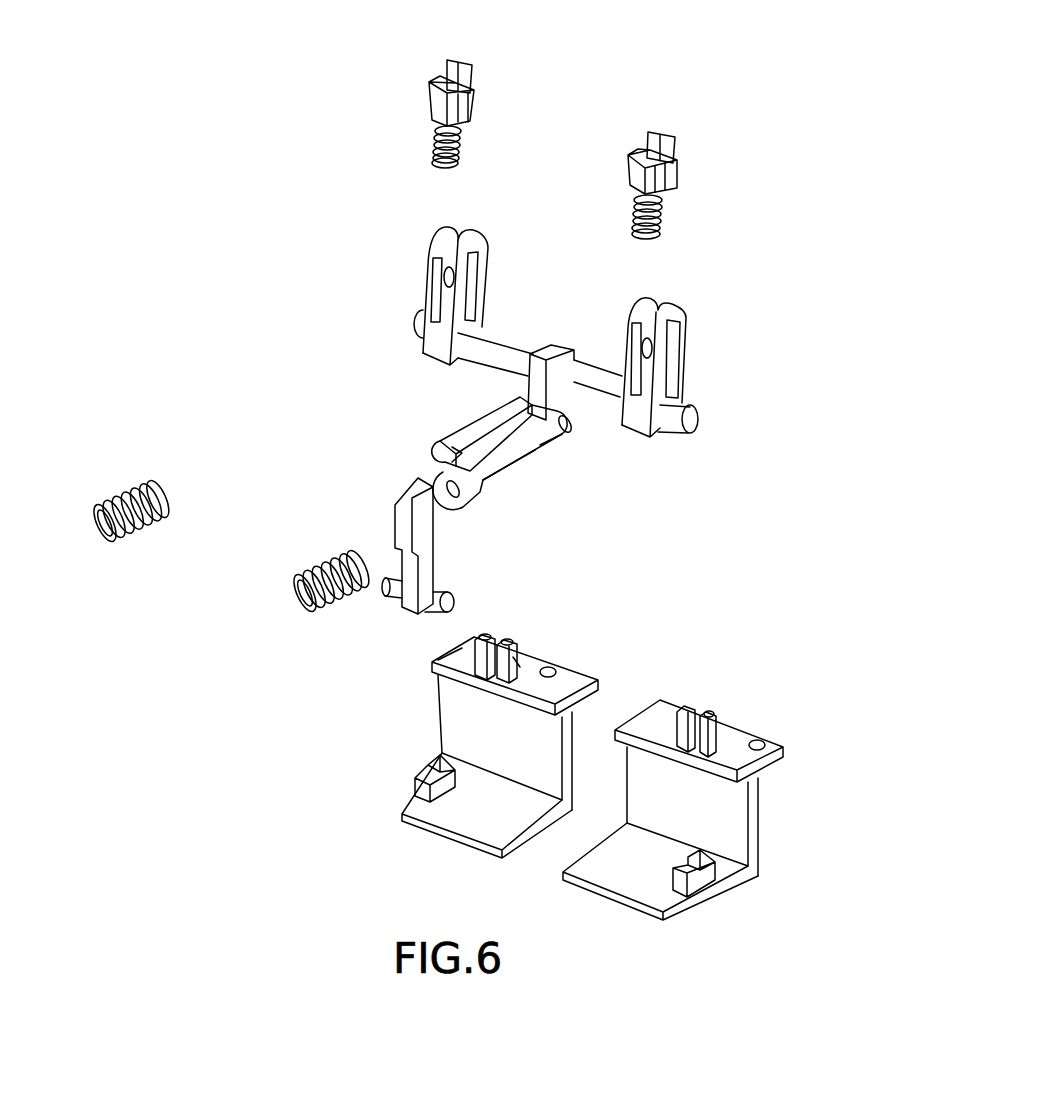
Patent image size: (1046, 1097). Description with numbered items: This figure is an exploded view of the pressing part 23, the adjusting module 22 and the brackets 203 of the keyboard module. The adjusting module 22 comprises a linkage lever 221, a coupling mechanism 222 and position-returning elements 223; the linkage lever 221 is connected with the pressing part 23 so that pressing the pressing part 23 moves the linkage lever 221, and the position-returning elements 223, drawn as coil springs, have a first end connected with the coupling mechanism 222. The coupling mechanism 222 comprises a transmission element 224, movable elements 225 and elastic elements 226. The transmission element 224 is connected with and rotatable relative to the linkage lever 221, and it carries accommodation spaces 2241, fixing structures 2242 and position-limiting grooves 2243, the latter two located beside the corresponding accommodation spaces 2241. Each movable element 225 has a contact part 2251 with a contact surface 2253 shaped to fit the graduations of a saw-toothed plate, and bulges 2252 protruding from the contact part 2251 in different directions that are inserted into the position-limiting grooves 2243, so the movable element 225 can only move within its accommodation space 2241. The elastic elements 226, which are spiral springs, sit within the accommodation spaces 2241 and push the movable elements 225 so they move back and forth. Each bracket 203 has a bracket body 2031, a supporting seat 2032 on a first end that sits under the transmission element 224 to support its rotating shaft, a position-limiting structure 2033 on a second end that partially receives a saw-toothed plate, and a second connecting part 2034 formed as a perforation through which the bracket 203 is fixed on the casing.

The adjusting module 22 is at (427, 419).
The linkage lever 221 is at (503, 460).
The coupling mechanism 222 is at (555, 405).
The position-returning element 223 is at (123, 490).
The transmission element 224 is at (533, 392).
The accommodation space 2241 is at (655, 300).
The fixing structure 2242 is at (430, 265).
The position-limiting groove 2243 is at (678, 365).
The movable element 225 is at (686, 119).
The contact part 2251 is at (468, 75).
The bulge 2252 is at (432, 83).
The contact surface 2253 is at (460, 58).
The elastic element 226 is at (433, 148).
The pressing part 23 is at (412, 588).
The bracket 203 is at (562, 645).
The bracket body 2031 is at (753, 822).
The supporting seat 2032 is at (700, 877).
The position-limiting structure 2033 is at (707, 722).
The second connecting part 2034 is at (760, 748).